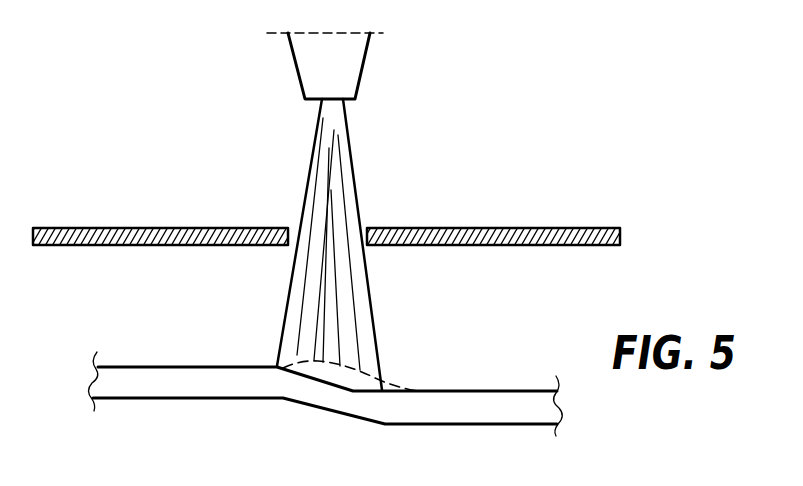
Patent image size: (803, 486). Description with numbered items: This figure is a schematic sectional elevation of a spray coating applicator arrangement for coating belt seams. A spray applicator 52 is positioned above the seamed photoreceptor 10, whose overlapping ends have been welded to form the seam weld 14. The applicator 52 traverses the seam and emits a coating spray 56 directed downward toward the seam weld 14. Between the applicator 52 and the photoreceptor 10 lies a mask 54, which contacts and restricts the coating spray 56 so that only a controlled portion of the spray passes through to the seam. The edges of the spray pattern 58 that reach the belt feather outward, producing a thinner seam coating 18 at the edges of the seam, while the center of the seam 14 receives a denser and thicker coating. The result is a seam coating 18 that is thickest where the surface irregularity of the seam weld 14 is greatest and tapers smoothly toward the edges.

The flexible photoreceptor 10 is at (195, 348).
The seam weld 14 is at (330, 383).
The seam coating 18 is at (342, 365).
The spray applicator 52 is at (366, 68).
The mask 54 is at (508, 228).
The coating spray 56 is at (333, 167).
The edges of the spray pattern 58 is at (375, 320).